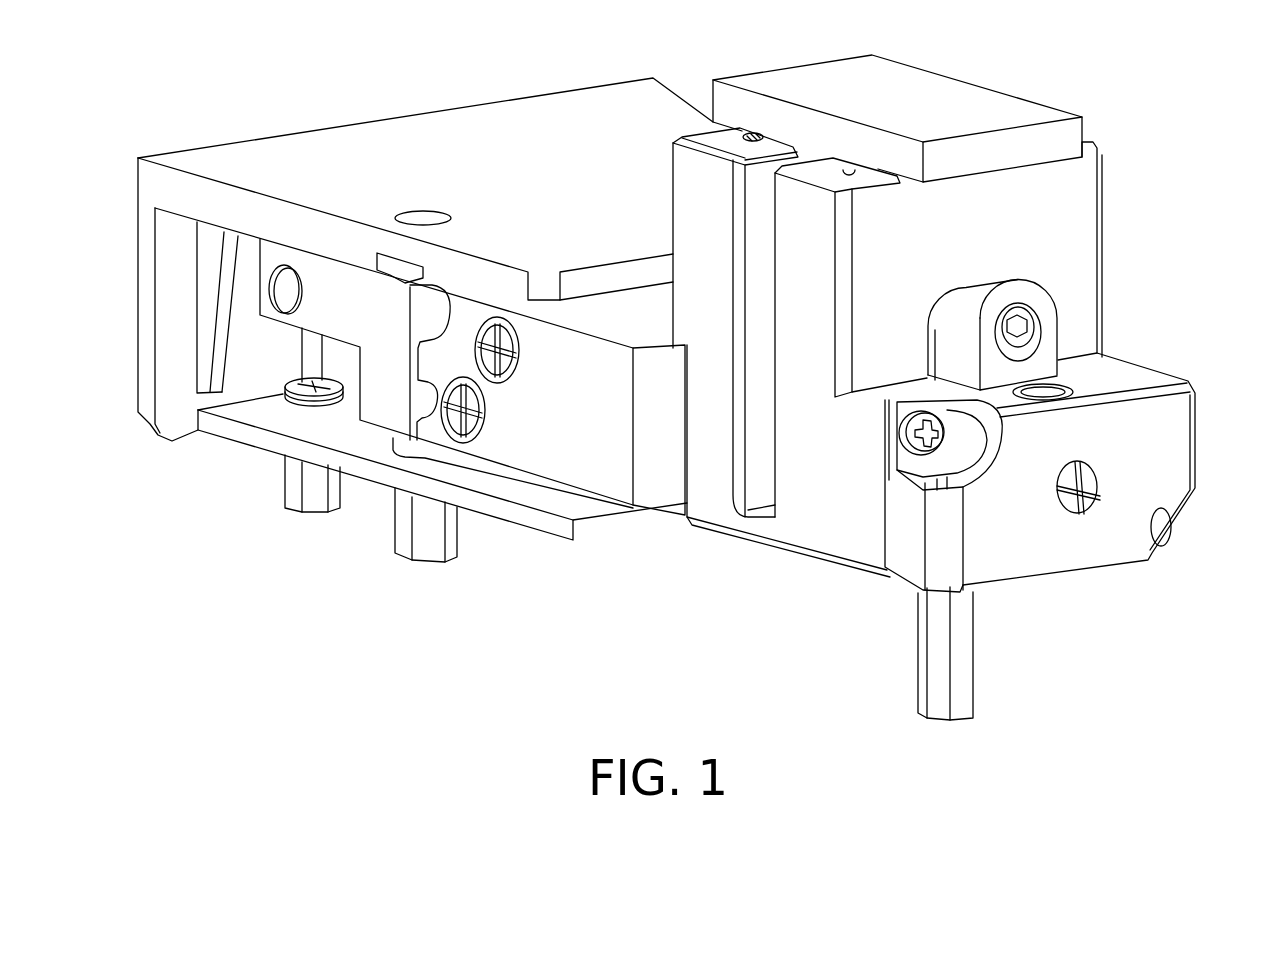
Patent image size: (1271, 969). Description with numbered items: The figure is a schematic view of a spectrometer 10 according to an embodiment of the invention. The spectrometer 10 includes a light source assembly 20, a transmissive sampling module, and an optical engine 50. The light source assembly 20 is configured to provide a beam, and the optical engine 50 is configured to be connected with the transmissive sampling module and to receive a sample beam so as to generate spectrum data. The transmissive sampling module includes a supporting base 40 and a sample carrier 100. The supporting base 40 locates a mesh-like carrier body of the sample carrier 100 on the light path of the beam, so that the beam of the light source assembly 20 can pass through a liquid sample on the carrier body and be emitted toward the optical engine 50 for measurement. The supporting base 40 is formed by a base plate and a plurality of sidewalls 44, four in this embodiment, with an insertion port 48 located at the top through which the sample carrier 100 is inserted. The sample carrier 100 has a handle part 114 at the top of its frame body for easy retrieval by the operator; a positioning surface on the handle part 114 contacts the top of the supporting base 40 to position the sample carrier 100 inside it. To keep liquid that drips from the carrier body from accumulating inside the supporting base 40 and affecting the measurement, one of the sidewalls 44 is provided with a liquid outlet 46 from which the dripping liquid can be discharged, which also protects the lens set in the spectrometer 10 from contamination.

The spectrometer 10 is at (1204, 732).
The light source assembly 20 is at (1157, 378).
The supporting base 40 is at (944, 325).
The sidewall 44 is at (1085, 225).
The liquid outlet 46 is at (758, 500).
The insertion port 48 is at (748, 133).
The optical engine 50 is at (369, 119).
The sample carrier 100 is at (923, 115).
The handle part 114 is at (1072, 87).